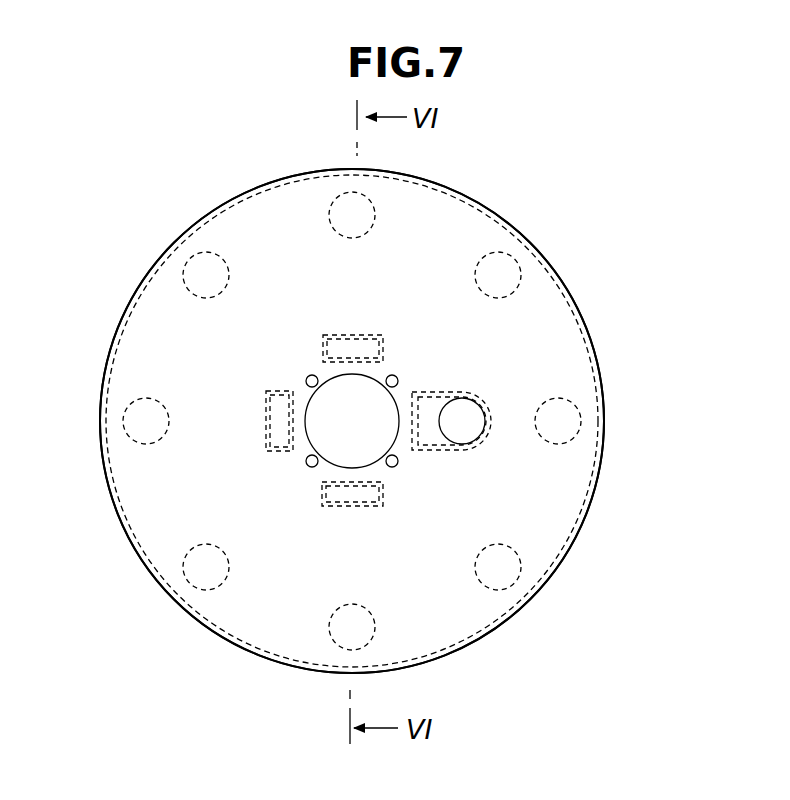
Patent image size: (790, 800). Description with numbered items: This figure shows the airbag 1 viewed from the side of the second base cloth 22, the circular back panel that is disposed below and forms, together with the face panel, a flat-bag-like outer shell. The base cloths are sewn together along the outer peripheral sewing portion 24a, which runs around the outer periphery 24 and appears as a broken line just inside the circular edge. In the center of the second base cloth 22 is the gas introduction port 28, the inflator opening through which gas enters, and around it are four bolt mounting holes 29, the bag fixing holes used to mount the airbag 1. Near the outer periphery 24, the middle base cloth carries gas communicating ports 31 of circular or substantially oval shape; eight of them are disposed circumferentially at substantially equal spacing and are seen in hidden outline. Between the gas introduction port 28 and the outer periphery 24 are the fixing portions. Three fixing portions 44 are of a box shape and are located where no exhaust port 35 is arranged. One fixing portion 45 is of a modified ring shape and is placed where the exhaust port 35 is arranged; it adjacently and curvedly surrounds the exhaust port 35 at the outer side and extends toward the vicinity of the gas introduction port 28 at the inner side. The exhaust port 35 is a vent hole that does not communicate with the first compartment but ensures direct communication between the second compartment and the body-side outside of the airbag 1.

The airbag 1 is at (501, 205).
The second base cloth 22 is at (572, 345).
The outer periphery 24 is at (606, 408).
The outer peripheral sewing portion 24a is at (598, 448).
The gas introduction port 28 is at (393, 443).
The bolt mounting holes 29 is at (308, 377).
The gas communicating ports 31 is at (335, 230).
The exhaust port 35 is at (462, 410).
The fixing portion 44 is at (363, 335).
The fixing portion 45 is at (460, 450).